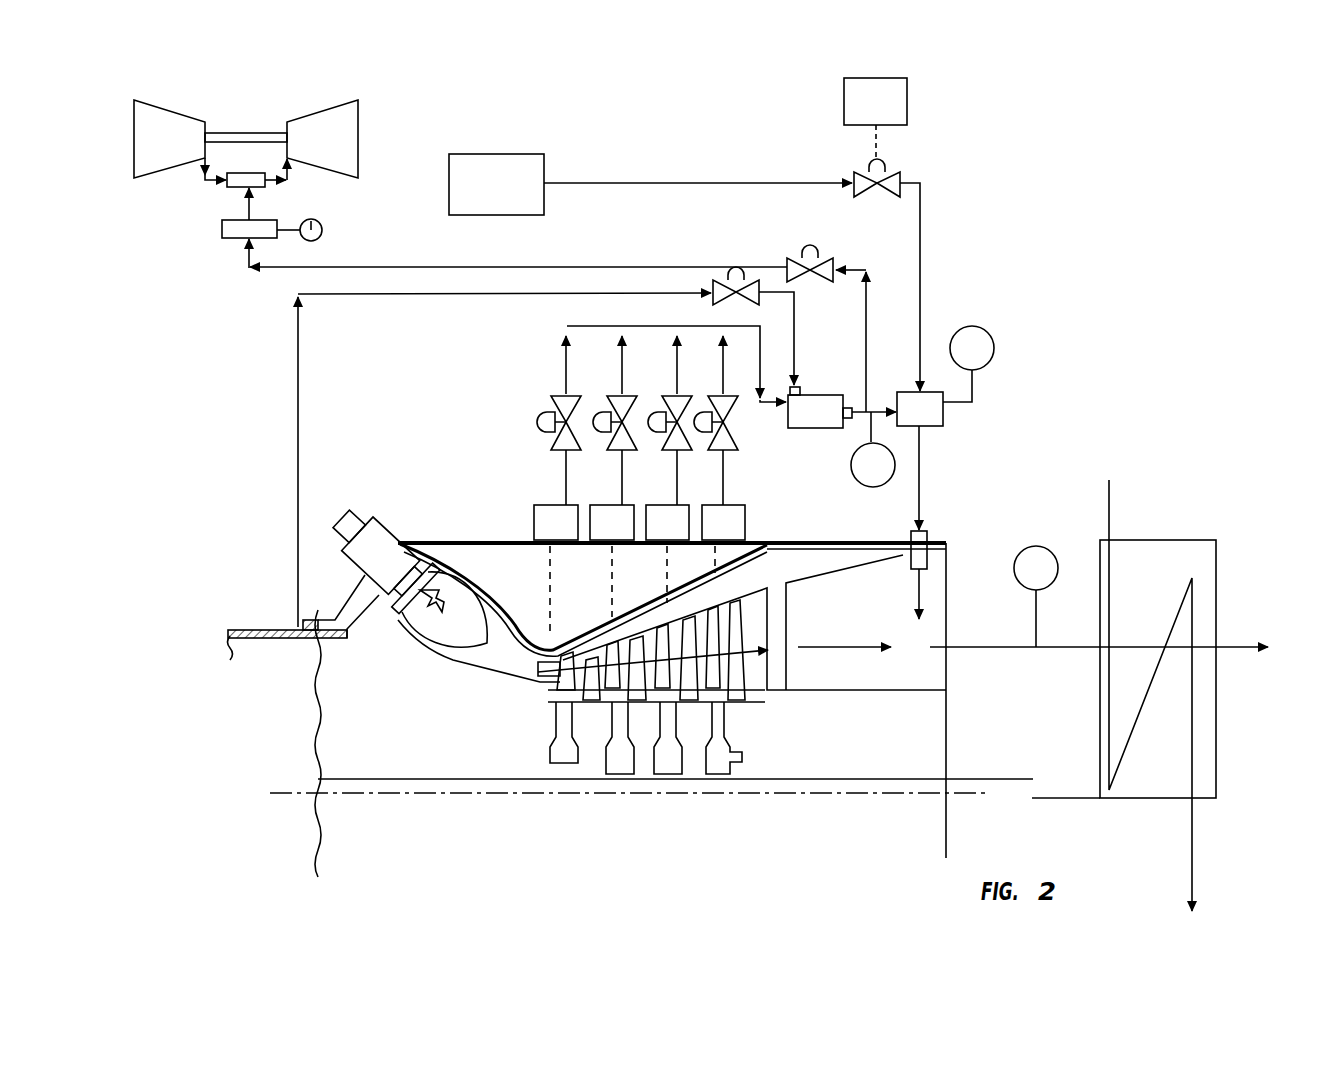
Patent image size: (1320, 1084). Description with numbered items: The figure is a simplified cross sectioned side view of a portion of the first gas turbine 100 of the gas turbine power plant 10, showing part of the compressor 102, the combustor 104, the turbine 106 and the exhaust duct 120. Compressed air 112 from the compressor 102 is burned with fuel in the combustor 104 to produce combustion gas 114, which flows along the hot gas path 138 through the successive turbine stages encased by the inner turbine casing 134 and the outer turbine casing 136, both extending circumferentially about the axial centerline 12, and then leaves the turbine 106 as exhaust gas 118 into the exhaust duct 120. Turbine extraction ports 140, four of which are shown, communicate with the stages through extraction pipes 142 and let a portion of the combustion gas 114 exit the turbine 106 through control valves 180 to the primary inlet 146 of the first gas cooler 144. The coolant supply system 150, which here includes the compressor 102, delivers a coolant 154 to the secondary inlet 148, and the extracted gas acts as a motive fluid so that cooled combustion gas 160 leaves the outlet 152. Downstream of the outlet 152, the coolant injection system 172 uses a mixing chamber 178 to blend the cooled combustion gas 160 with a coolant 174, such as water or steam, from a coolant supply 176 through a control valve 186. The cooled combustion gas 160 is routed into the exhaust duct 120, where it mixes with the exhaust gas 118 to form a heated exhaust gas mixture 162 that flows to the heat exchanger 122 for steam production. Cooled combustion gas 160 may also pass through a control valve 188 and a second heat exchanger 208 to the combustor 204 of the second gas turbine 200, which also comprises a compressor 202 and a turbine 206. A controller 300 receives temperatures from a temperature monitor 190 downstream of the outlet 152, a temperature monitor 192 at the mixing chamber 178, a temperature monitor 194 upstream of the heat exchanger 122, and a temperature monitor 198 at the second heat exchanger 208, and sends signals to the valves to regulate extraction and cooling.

The gas turbine power plant 10 is at (1053, 238).
The axial centerline 12 is at (407, 795).
The first gas turbine 100 is at (478, 386).
The compressor 102 is at (254, 630).
The combustor 104 is at (372, 545).
The turbine 106 is at (490, 800).
The compressed air 112 is at (806, 338).
The combustion gas 114 is at (645, 326).
The exhaust gas 118 is at (832, 647).
The exhaust duct 120 is at (814, 800).
The heat exchanger 122 is at (1170, 540).
The inner turbine casing 134 is at (480, 568).
The outer turbine casing 136 is at (428, 543).
The hot gas path 138 is at (664, 650).
The turbine extraction ports 140 is at (548, 505).
The extraction pipes 142 is at (515, 547).
The first gas cooler 144 is at (799, 425).
The primary inlet 146 is at (783, 406).
The secondary inlet 148 is at (801, 389).
The coolant supply system 150 is at (268, 471).
The outlet 152 is at (850, 420).
The coolant 154 is at (818, 322).
The cooled combustion gas 160 is at (253, 212).
The heated exhaust gas mixture 162 is at (978, 648).
The coolant injection system 172 is at (928, 236).
The coolant 174 is at (683, 182).
The coolant supply 176 is at (480, 197).
The mixing chamber 178 is at (905, 421).
The control valves 180 is at (545, 410).
The control valve 186 is at (902, 172).
The control valve 188 is at (835, 256).
The temperature monitor 190 is at (858, 476).
The temperature monitor 192 is at (957, 359).
The temperature monitor 194 is at (1021, 579).
The temperature monitor 198 is at (323, 223).
The second gas turbine 200 is at (236, 112).
The compressor 202 is at (176, 104).
The combustor 204 is at (227, 184).
The turbine 206 is at (340, 103).
The second heat exchanger 208 is at (222, 231).
The controller 300 is at (860, 115).